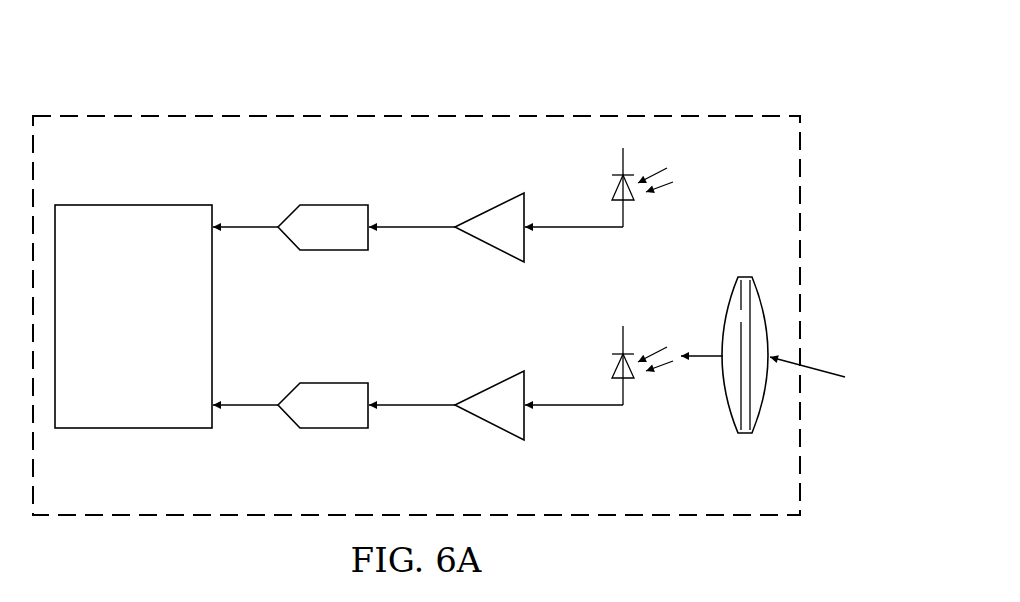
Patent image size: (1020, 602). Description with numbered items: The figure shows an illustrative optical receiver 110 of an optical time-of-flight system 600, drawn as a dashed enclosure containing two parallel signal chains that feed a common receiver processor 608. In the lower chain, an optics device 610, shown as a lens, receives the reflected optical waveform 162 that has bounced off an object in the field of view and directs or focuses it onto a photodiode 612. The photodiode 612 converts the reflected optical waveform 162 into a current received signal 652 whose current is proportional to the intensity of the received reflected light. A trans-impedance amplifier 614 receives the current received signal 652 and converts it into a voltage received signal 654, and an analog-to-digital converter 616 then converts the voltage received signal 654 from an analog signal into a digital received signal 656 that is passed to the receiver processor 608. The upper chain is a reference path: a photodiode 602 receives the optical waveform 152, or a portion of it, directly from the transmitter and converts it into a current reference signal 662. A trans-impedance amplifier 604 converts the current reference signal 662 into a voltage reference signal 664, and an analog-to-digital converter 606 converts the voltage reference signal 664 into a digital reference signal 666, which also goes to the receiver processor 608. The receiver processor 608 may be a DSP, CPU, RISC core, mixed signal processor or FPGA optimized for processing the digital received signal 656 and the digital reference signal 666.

The optical TOF system 600 is at (706, 80).
The optical receiver 110 is at (362, 116).
The receiver processor 608 is at (111, 360).
The analog-to-digital converter 606 is at (330, 205).
The trans-impedance amplifier 604 is at (490, 210).
The photodiode 602 is at (612, 181).
The digital reference signal 666 is at (255, 222).
The voltage reference signal 664 is at (415, 222).
The current reference signal 662 is at (575, 230).
The optical waveform 152 is at (665, 187).
The analog-to-digital converter 616 is at (330, 428).
The trans-impedance amplifier 614 is at (490, 422).
The photodiode 612 is at (612, 359).
The digital received signal 656 is at (255, 410).
The voltage received signal 654 is at (415, 410).
The current received signal 652 is at (575, 408).
The optics device 610 is at (725, 392).
The reflected optical waveform 162 is at (822, 370).